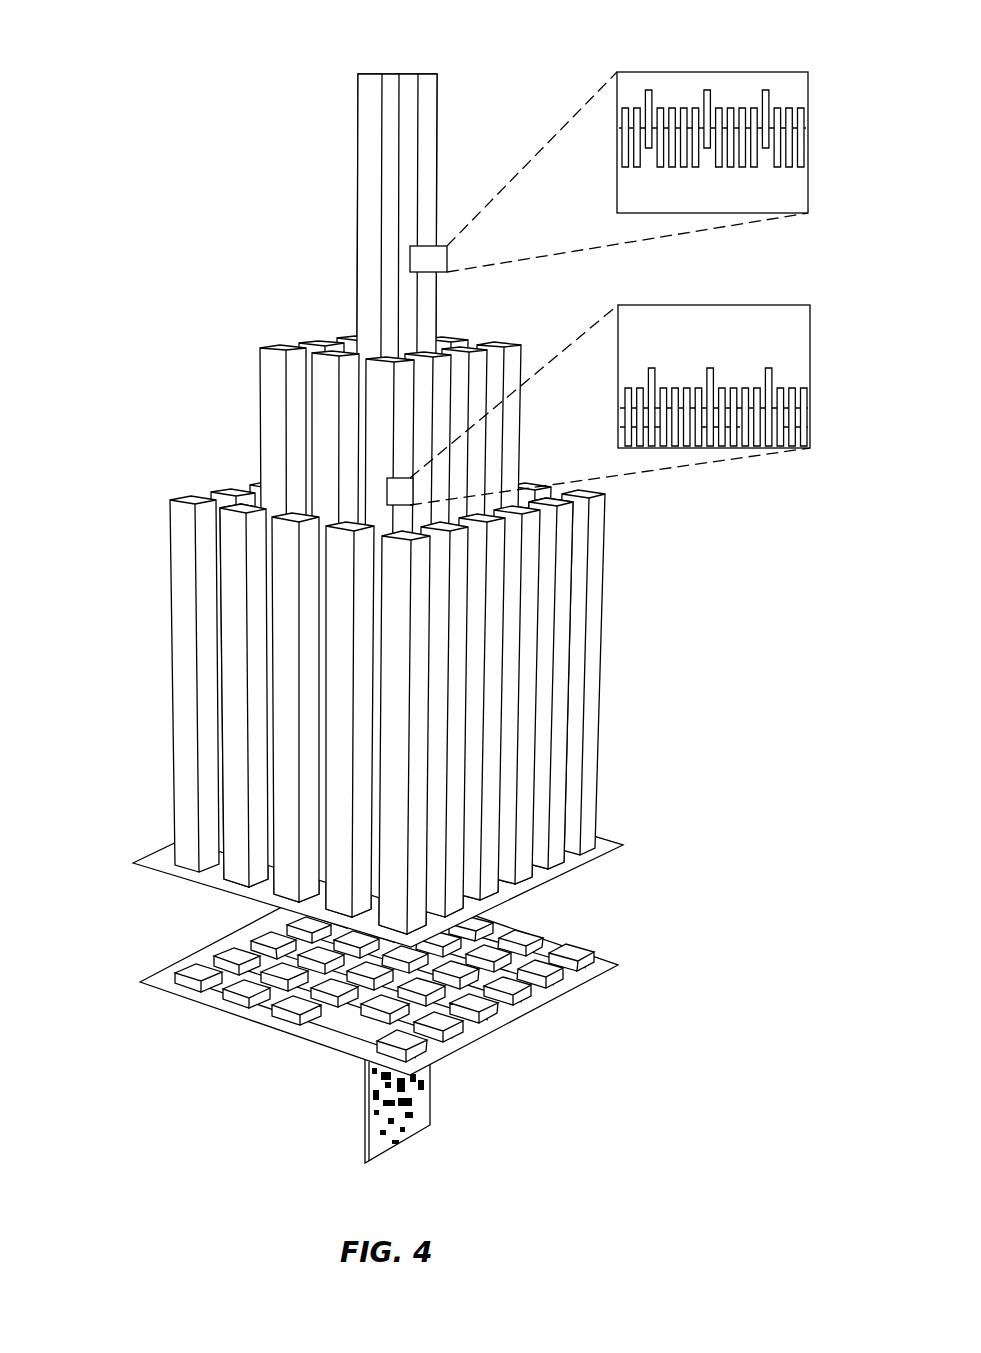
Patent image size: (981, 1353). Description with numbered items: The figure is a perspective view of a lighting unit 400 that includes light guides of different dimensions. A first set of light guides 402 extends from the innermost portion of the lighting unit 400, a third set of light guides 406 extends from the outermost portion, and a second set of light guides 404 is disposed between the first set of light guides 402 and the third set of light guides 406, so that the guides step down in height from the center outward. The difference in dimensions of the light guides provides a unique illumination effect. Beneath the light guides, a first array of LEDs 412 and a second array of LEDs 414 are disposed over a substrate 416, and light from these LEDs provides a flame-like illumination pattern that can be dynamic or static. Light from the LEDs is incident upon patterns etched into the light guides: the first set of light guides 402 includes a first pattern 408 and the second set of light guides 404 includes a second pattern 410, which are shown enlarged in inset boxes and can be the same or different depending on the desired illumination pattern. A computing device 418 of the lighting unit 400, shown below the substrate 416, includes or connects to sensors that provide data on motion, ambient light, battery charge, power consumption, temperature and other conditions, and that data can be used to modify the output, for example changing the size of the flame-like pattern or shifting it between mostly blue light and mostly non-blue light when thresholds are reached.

The lighting unit 400 is at (128, 152).
The first set of light guides 402 is at (393, 307).
The second set of light guides 404 is at (318, 450).
The third set of light guides 406 is at (226, 600).
The first pattern 408 is at (757, 170).
The second pattern 410 is at (746, 386).
The first array of LEDs 412 is at (293, 1023).
The second array of LEDs 414 is at (420, 1062).
The substrate 416 is at (545, 1012).
The computing device 418 is at (403, 1143).